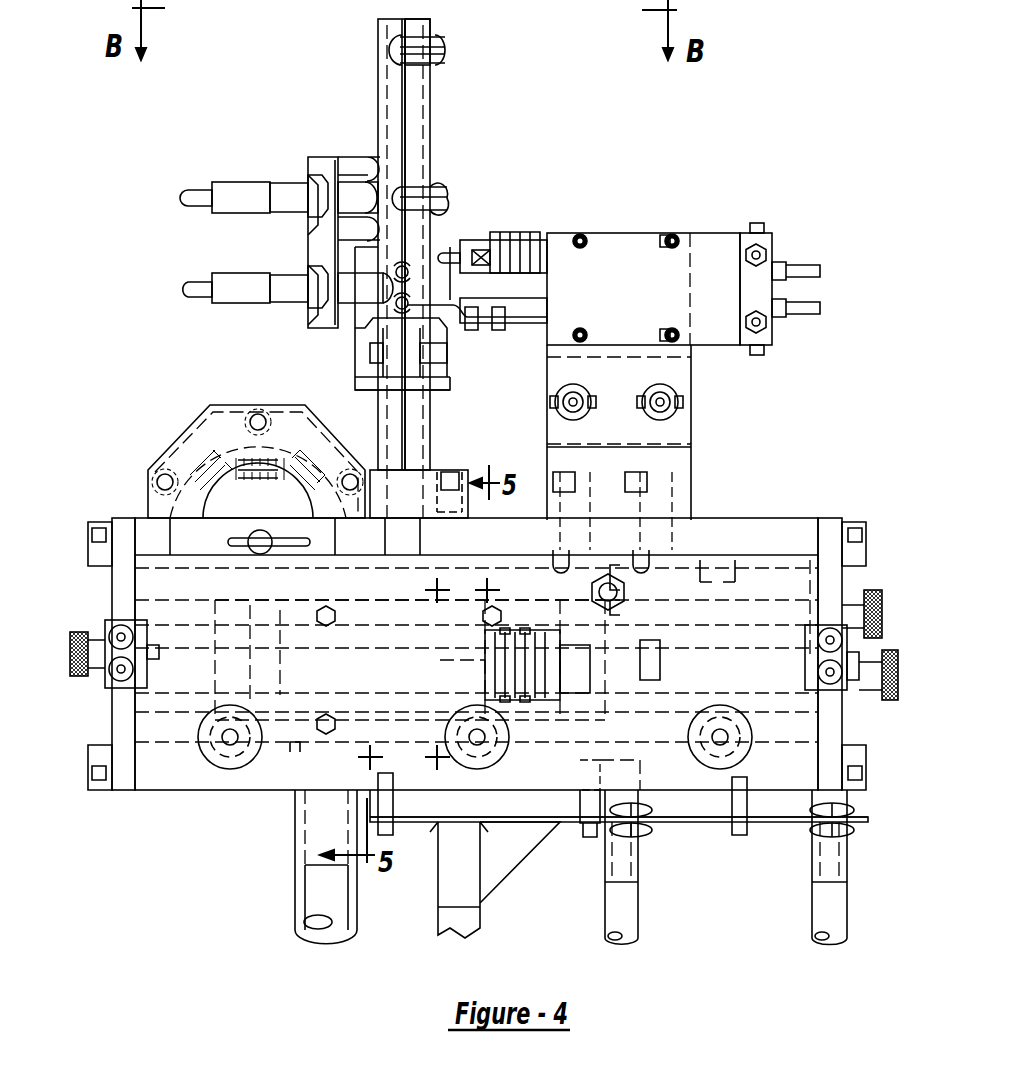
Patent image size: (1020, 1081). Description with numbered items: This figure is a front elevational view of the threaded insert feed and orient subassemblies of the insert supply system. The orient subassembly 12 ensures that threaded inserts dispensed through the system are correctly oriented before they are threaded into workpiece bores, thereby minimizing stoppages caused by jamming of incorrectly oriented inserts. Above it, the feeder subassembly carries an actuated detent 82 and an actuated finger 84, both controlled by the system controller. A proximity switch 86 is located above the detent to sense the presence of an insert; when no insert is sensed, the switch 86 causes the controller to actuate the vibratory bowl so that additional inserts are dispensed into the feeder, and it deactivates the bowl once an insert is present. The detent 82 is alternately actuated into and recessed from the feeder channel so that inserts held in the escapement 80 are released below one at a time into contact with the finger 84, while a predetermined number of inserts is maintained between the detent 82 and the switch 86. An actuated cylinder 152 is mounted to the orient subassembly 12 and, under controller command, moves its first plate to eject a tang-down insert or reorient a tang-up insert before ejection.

The escapement 80 is at (413, 88).
The proximity switch 86 is at (435, 135).
The actuated detent 82 is at (456, 234).
The actuated finger 84 is at (456, 330).
The orient subassembly 12 is at (116, 600).
The actuated cylinder 152 is at (852, 690).